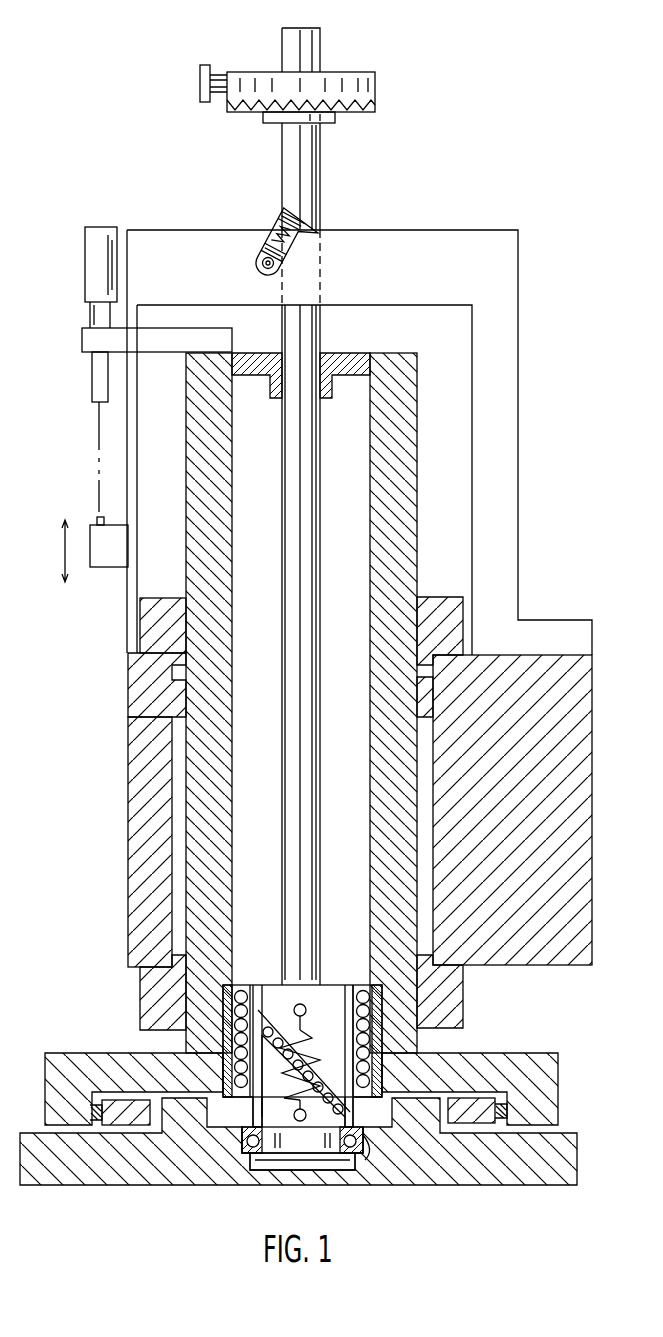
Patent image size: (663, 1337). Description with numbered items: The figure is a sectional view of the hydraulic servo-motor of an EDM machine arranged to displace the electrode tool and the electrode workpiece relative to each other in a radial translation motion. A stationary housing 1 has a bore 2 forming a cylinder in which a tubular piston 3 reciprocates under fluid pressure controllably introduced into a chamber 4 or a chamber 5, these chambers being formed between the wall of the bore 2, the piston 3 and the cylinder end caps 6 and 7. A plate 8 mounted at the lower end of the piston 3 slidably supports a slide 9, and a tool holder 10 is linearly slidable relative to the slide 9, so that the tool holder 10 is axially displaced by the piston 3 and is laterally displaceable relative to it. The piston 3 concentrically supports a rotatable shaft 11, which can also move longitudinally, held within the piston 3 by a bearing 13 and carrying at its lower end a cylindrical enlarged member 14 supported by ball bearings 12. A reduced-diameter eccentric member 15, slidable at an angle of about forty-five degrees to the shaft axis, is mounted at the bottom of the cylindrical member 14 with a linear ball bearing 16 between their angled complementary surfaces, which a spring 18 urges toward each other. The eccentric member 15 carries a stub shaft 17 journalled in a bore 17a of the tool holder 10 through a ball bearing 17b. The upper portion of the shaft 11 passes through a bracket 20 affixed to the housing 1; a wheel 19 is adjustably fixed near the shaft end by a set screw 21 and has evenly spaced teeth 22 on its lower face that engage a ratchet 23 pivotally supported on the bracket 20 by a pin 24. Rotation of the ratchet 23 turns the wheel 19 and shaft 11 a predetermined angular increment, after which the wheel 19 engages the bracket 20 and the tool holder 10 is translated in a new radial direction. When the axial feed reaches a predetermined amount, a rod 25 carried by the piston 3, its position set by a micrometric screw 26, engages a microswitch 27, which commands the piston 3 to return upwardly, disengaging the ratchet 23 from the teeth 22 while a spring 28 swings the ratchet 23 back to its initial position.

The stationary housing 1 is at (590, 760).
The bore 2 is at (432, 828).
The piston 3 is at (374, 788).
The chamber 4 is at (172, 676).
The chamber 5 is at (172, 767).
The cylinder end cap 6 is at (170, 612).
The cylinder end cap 7 is at (142, 996).
The plate 8 is at (537, 1072).
The slide 9 is at (468, 1108).
The tool holder 10 is at (568, 1155).
The rotatable shaft 11 is at (288, 630).
The ball bearings 12 is at (240, 990).
The bearing 13 is at (332, 386).
The cylindrical enlarged member 14 is at (328, 990).
The eccentric member 15 is at (264, 1110).
The linear ball bearing 16 is at (325, 1085).
The stub shaft 17 is at (300, 1152).
The bore 17a is at (368, 1152).
The ball bearing 17b is at (392, 1105).
The spring 18 is at (308, 1014).
The wheel 19 is at (385, 88).
The bracket 20 is at (486, 240).
The set screw 21 is at (198, 78).
The teeth 22 is at (345, 112).
The ratchet 23 is at (282, 214).
The pin 24 is at (260, 270).
The rod 25 is at (95, 382).
The micrometric screw 26 is at (92, 268).
The microswitch 27 is at (110, 565).
The spring 28 is at (300, 260).